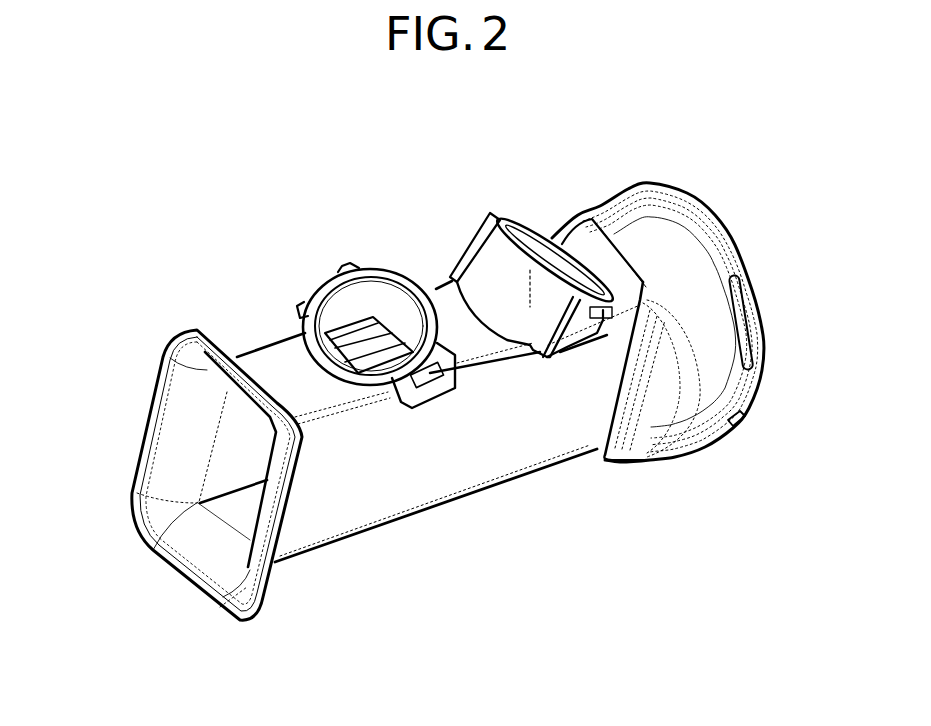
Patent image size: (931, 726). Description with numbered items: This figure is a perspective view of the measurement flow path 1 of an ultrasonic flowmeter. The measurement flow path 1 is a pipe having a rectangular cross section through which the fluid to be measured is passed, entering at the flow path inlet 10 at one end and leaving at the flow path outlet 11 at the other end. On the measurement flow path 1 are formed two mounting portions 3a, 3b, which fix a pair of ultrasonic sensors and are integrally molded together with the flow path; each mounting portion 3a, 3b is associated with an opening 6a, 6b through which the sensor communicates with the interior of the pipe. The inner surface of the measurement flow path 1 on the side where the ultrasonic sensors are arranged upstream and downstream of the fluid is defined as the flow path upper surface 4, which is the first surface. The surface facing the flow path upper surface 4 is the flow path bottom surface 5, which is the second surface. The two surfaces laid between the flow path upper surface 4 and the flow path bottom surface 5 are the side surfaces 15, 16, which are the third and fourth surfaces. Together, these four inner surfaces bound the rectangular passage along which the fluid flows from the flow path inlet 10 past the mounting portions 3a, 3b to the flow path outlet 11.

The measurement flow path 1 is at (452, 440).
The mounting portion 3a is at (313, 295).
The mounting portion 3b is at (497, 214).
The flow path upper surface (first surface) 4 is at (272, 358).
The flow path bottom surface (second surface) 5 is at (240, 510).
The opening 6a is at (375, 317).
The opening 6b is at (530, 247).
The flow path inlet 10 is at (167, 458).
The flow path outlet 11 is at (707, 400).
The side surface (third surface) 15 is at (320, 506).
The side surface (fourth surface) 16 is at (247, 427).